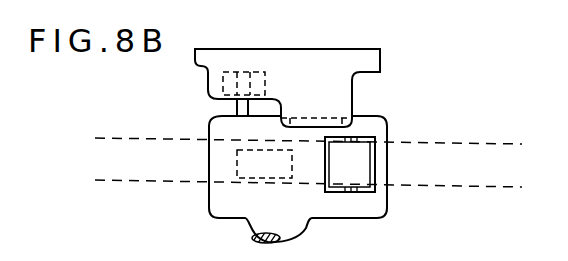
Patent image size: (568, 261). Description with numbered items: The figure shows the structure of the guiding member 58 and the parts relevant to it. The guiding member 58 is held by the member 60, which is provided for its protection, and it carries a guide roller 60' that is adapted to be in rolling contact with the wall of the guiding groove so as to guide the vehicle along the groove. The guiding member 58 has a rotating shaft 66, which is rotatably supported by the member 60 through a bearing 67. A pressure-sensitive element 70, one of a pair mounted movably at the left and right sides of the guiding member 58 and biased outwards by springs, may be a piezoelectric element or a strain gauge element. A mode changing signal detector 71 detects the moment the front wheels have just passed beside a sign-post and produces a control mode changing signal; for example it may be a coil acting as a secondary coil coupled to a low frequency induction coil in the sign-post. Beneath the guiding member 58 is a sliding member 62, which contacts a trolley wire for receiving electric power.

The member 60 is at (287, 69).
The guiding member 58 is at (392, 99).
The pressure-sensitive element 70 is at (316, 117).
The bearing 67 is at (225, 84).
The rotating shaft 66 is at (236, 107).
The guide roller 60' is at (383, 164).
The mode changing signal detector 71 is at (263, 168).
The sliding member 62 is at (300, 232).